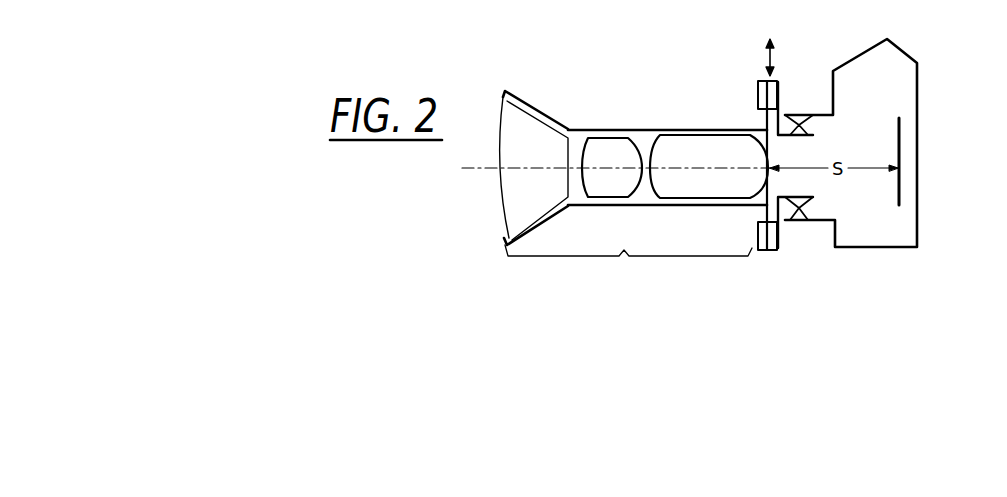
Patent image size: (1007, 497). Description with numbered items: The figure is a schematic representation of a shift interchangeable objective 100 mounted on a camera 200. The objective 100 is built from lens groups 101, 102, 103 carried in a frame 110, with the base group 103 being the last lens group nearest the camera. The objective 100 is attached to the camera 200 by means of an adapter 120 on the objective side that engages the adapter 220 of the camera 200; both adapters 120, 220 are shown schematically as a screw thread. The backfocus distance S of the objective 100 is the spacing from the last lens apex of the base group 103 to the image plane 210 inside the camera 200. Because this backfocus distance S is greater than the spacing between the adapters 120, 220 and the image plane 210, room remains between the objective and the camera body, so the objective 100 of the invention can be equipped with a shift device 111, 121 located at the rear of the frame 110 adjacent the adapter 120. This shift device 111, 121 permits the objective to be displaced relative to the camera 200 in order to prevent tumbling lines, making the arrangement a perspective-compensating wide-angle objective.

The objective 100 is at (628, 265).
The lens group 101 is at (520, 127).
The lens group 102 is at (607, 148).
The base group 103 is at (683, 148).
The frame 110 is at (637, 127).
The shift device 111 is at (758, 94).
The adapter 120 is at (813, 125).
The shift device 121 is at (778, 85).
The camera 200 is at (918, 223).
The image plane 210 is at (902, 174).
The adapter 220 is at (815, 222).